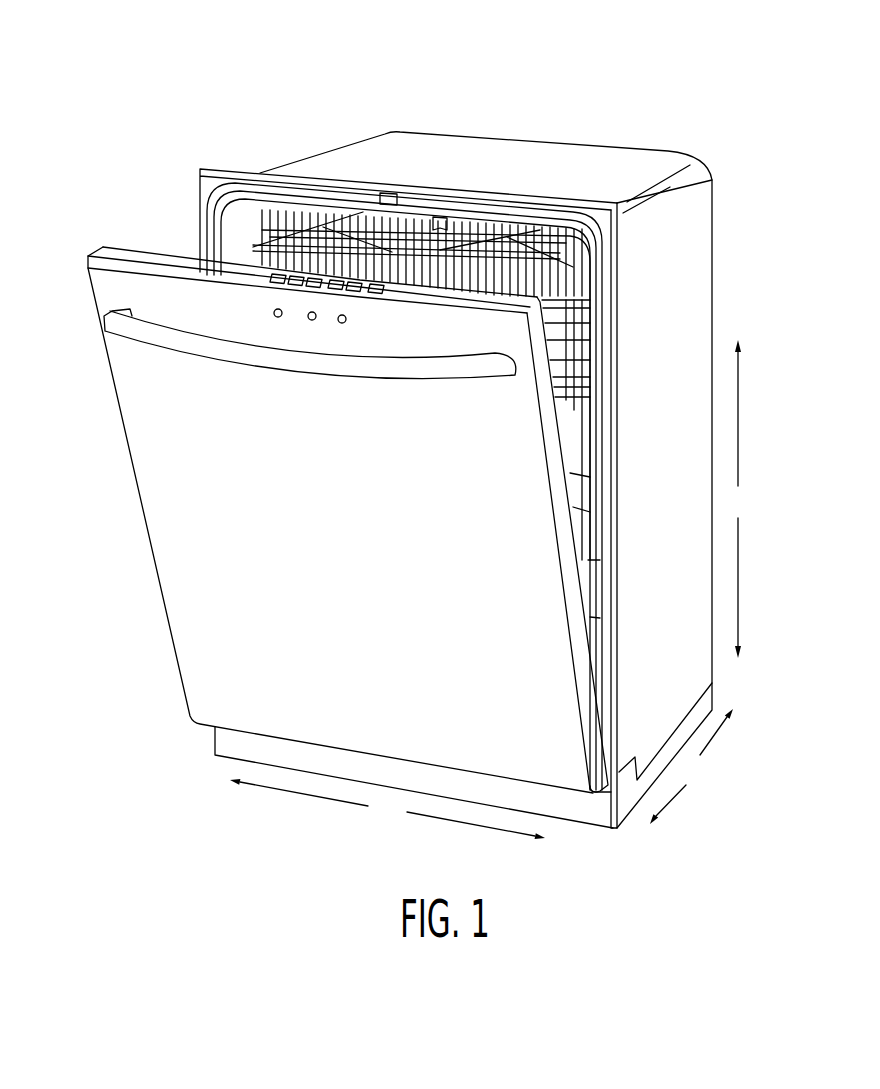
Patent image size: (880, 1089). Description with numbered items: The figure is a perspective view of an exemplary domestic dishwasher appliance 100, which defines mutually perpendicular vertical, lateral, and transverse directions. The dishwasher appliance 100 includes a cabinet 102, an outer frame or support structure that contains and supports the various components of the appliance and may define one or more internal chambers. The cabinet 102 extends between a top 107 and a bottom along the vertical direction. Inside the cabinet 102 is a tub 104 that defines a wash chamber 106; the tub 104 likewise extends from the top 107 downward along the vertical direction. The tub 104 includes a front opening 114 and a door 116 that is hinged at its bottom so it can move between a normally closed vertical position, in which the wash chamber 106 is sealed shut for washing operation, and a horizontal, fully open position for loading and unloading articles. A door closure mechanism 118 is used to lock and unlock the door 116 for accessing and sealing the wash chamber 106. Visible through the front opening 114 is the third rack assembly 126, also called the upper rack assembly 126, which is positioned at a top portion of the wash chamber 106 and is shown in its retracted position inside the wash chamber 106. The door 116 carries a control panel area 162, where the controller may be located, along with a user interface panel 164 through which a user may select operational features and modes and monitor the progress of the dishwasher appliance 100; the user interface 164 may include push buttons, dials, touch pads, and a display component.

The dishwasher appliance 100 is at (216, 96).
The cabinet 102 is at (693, 232).
The tub 104 is at (262, 205).
The wash chamber 106 is at (354, 222).
The top 107 is at (257, 221).
The front opening 114 is at (489, 236).
The door 116 is at (173, 560).
The door closure mechanism 118 is at (403, 212).
The third rack assembly 126 is at (416, 222).
The control panel area 162 is at (157, 255).
The user interface panel 164 is at (312, 320).